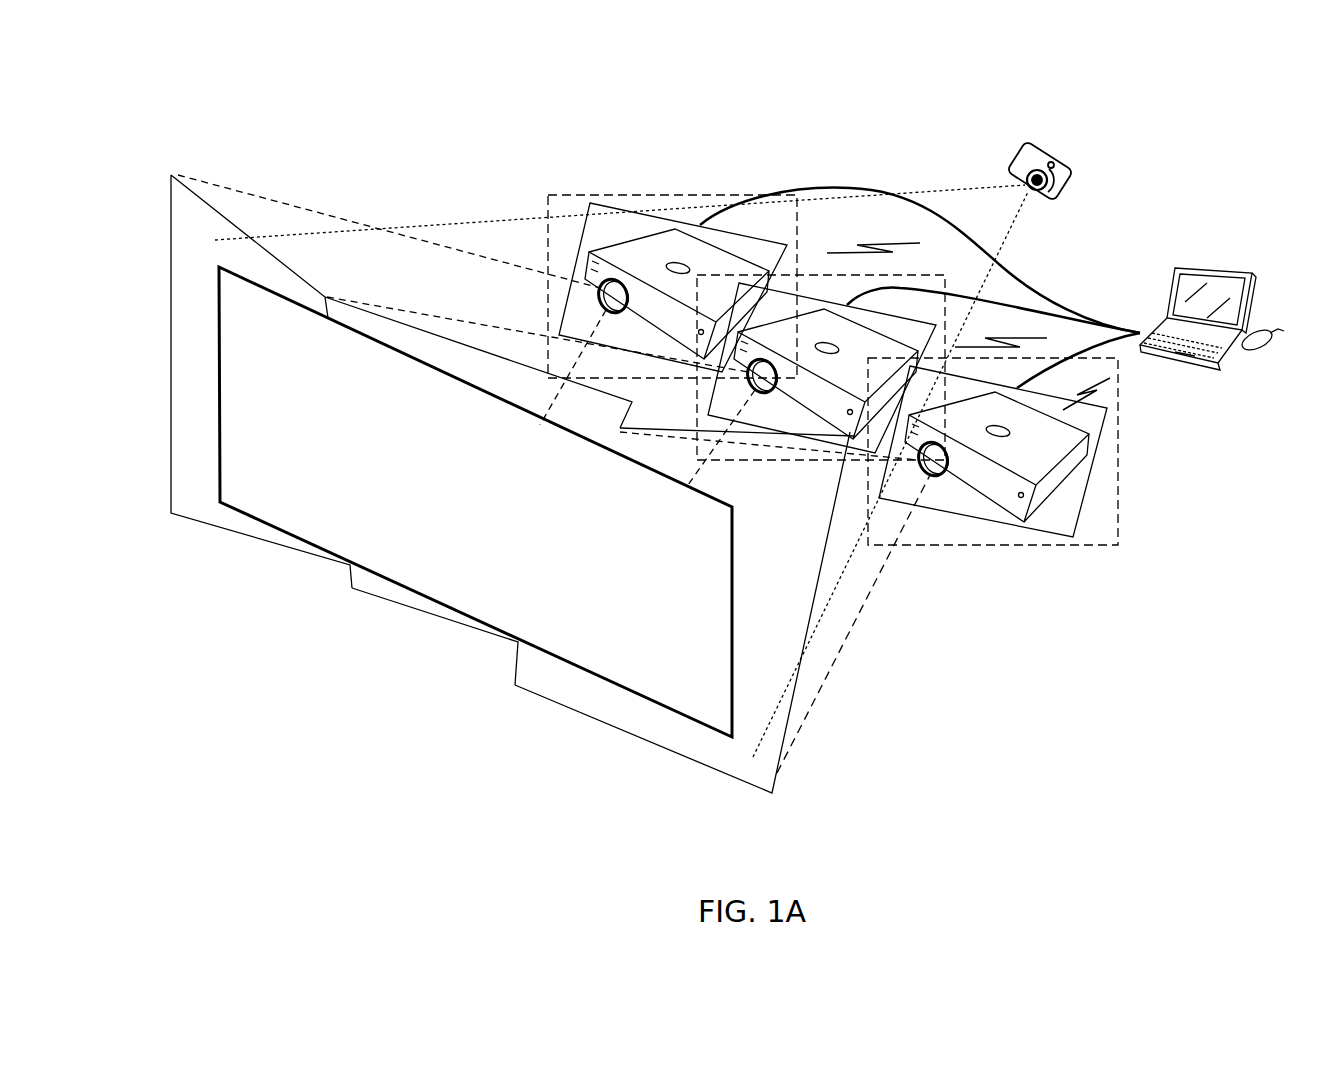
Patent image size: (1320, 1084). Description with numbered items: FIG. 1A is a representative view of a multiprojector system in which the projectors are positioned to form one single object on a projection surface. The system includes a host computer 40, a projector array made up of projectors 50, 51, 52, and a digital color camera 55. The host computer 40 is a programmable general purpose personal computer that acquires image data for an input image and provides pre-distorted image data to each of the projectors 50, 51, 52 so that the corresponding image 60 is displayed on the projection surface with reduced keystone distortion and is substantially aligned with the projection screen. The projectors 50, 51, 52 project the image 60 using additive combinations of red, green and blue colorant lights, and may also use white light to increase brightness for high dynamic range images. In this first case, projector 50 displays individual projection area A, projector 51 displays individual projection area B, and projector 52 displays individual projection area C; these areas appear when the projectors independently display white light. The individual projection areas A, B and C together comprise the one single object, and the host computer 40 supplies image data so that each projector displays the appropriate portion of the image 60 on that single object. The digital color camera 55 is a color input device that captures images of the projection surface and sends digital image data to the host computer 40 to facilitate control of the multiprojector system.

The host computer 40 is at (1255, 290).
The projector 50 is at (1016, 463).
The projector 51 is at (835, 378).
The projector 52 is at (630, 268).
The digital color camera 55 is at (1017, 153).
The image 60 is at (243, 487).
The individual projection area A is at (625, 712).
The individual projection area B is at (420, 605).
The individual projection area C is at (185, 503).